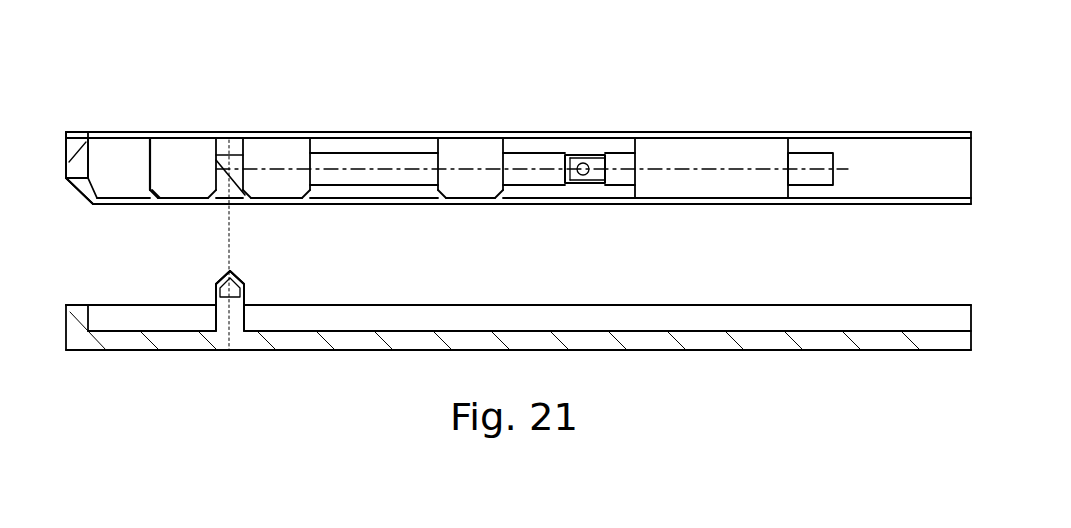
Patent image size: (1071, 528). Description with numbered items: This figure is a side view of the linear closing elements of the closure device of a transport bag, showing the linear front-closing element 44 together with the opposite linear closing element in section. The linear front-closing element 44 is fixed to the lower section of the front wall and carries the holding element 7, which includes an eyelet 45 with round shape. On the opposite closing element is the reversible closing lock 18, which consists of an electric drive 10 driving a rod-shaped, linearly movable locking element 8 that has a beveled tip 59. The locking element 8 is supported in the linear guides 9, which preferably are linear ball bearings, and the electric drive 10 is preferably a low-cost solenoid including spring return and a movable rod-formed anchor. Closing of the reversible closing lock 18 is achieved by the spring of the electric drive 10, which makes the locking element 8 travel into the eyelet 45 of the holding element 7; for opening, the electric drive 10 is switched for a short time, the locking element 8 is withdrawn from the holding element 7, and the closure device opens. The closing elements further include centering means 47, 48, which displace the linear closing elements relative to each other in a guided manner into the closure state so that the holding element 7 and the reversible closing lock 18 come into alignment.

The holding element 7 is at (222, 327).
The locking element 8 is at (528, 158).
The linear guides 9 is at (463, 162).
The electric drive 10 is at (736, 158).
The reversible closing lock 18 is at (604, 130).
The linear front-closing element 44 is at (236, 99).
The eyelet 45 is at (119, 89).
The centering means 47 is at (84, 196).
The centering means 48 is at (238, 198).
The beveled tip 59 is at (238, 158).